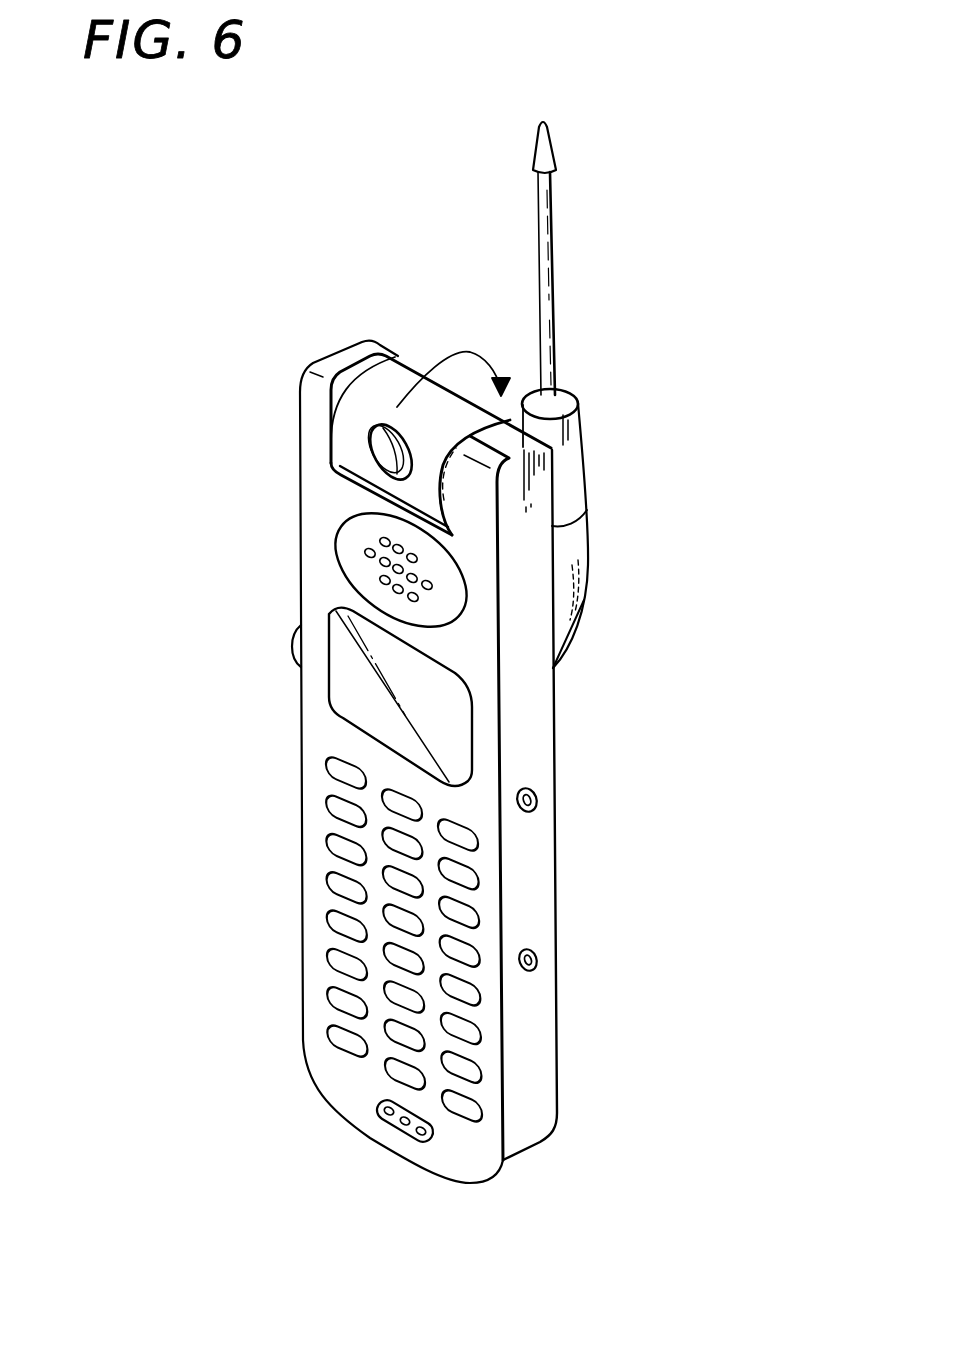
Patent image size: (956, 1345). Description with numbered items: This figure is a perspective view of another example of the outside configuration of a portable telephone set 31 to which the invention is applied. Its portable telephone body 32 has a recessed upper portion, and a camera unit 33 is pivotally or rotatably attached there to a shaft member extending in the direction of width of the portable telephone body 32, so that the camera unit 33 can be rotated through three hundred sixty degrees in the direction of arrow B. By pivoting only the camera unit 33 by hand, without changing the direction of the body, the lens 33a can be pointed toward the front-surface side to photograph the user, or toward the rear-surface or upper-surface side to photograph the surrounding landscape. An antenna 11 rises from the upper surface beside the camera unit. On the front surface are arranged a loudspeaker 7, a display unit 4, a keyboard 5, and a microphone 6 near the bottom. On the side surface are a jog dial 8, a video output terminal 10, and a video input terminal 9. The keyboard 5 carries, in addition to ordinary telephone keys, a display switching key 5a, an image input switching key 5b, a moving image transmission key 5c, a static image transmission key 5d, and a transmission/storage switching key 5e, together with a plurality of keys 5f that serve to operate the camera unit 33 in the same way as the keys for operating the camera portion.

The portable telephone set 31 is at (181, 1288).
The portable telephone body 32 is at (557, 747).
The camera unit 33 is at (390, 377).
The lens 33a is at (405, 446).
The antenna 11 is at (553, 280).
The loudspeaker 7 is at (372, 541).
The jog dial 8 is at (292, 643).
The display unit 4 is at (475, 707).
The video output terminal 10 is at (537, 803).
The video input terminal 9 is at (535, 950).
The keyboard 5 is at (292, 1043).
The display switching key 5a is at (358, 972).
The image input switching key 5b is at (415, 1007).
The moving image transmission key 5c is at (477, 1079).
The static image transmission key 5d is at (467, 1122).
The transmission/storage switching key 5e is at (477, 1041).
The keys for operating the camera unit 5f is at (400, 1043).
The microphone 6 is at (397, 1120).